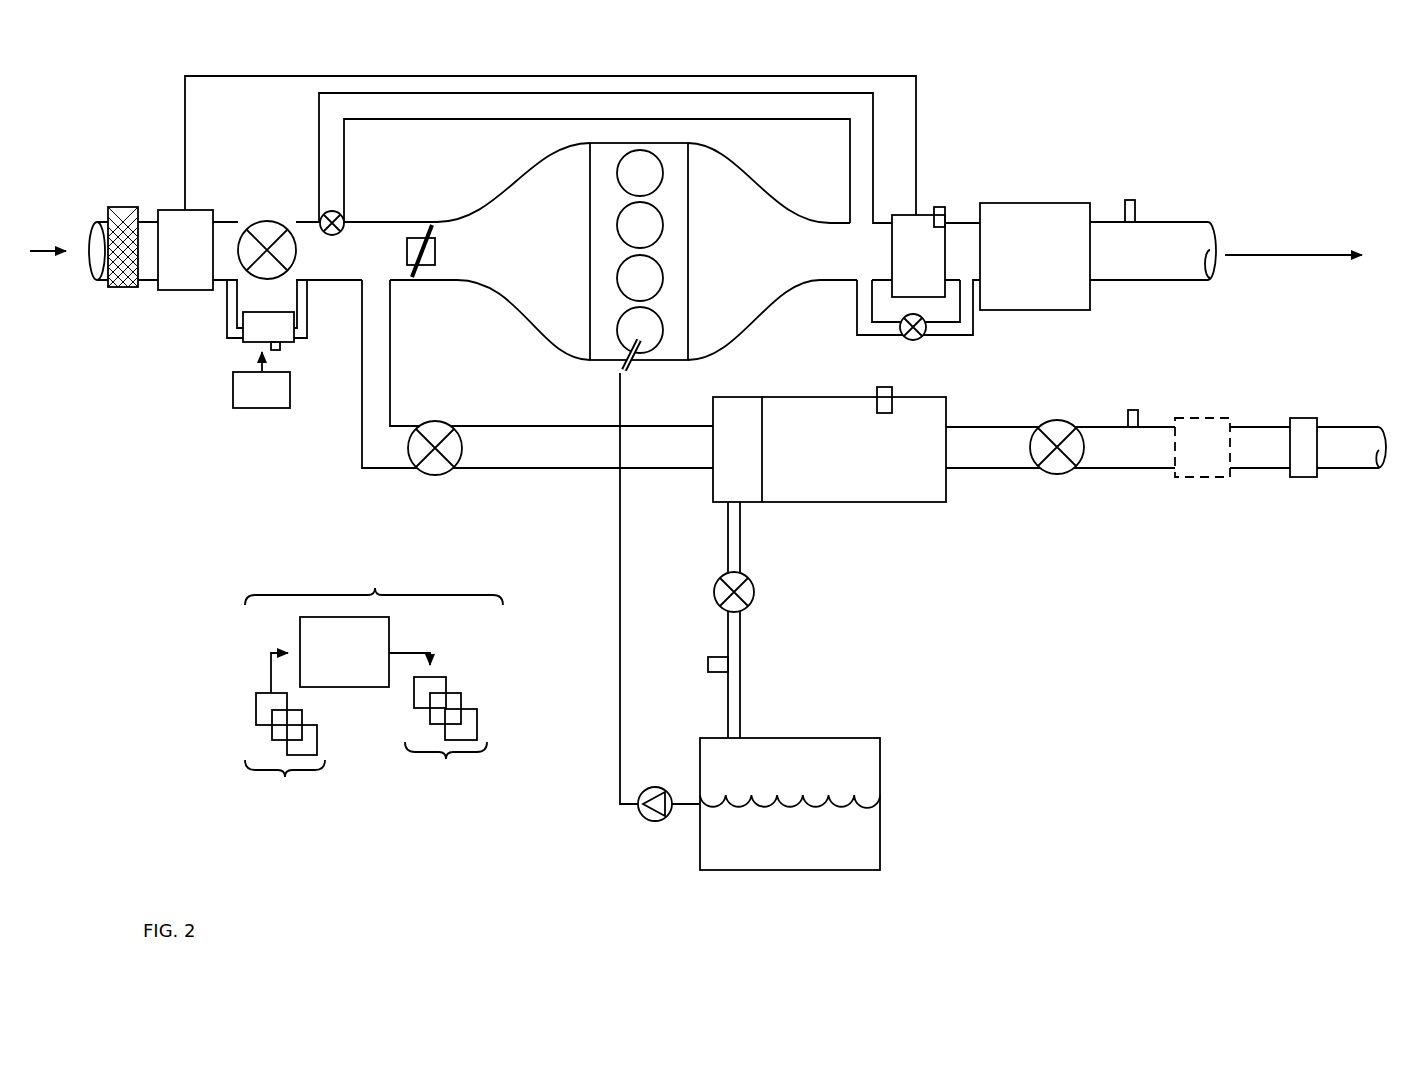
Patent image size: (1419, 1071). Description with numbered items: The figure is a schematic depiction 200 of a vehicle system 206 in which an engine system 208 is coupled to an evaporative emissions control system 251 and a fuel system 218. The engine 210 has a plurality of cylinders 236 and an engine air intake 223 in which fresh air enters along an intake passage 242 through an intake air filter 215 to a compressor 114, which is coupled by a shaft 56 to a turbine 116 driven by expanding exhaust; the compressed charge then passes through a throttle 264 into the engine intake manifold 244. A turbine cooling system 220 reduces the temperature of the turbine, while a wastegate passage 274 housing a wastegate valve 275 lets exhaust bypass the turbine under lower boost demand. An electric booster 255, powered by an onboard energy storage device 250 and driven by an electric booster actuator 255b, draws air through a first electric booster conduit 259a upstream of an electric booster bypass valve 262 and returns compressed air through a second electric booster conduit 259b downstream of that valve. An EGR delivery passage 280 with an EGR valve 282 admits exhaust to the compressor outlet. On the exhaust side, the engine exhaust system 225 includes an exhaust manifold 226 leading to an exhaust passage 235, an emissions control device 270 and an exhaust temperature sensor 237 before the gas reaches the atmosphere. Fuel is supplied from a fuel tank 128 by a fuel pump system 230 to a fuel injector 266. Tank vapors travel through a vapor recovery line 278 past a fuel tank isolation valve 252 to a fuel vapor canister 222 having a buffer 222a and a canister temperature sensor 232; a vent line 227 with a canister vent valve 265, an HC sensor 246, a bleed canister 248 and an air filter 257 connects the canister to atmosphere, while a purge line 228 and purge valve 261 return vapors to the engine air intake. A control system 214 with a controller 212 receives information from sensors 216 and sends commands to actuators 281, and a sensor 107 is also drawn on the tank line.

The schematic depiction 200 is at (1322, 127).
The vehicle system 206 is at (150, 152).
The intake passage 242 is at (150, 283).
The intake air filter 215 is at (130, 208).
The compressor 114 is at (185, 250).
The electric booster bypass valve 262 is at (266, 221).
The EGR valve 282 is at (337, 213).
The EGR delivery passage 280 is at (755, 120).
The shaft 56 is at (230, 77).
The engine air intake 223 is at (487, 195).
The engine intake manifold 244 is at (523, 301).
The throttle 264 is at (437, 258).
The engine 210 is at (688, 232).
The cylinders 236 is at (659, 166).
The fuel injector 266 is at (628, 366).
The exhaust manifold 226 is at (772, 251).
The engine system 208 is at (935, 118).
The turbine 116 is at (926, 256).
The cooling system 220 is at (942, 208).
The wastegate passage 274 is at (973, 338).
The wastegate valve 275 is at (915, 338).
The engine exhaust system 225 is at (1020, 163).
The emissions control device 270 is at (1020, 203).
The exhaust temperature sensor 237 is at (1122, 214).
The exhaust passage 235 is at (1165, 222).
The first electric booster conduit 259a is at (230, 325).
The second electric booster conduit 259b is at (306, 312).
The electric booster 255 is at (268, 327).
The electric booster actuator 255b is at (281, 349).
The onboard energy storage device 250 is at (261, 380).
The purge line 228 is at (537, 374).
The purge valve 261 is at (437, 422).
The fuel vapor canister 222 is at (948, 418).
The buffer 222a is at (738, 397).
The canister temperature sensor 232 is at (881, 386).
The vent line 227 is at (1166, 447).
The canister vent valve 265 is at (1057, 471).
The HC sensor 246 is at (1126, 424).
The bleed canister 248 is at (1200, 420).
The air filter 257 is at (1310, 418).
The evaporative emissions control system 251 is at (1367, 375).
The vapor recovery line 278 is at (727, 532).
The fuel tank isolation valve 252 is at (722, 607).
The fuel tank pressure transducer 107 is at (708, 662).
The fuel tank 128 is at (882, 795).
The fuel pump system 230 is at (658, 790).
The fuel system 218 is at (968, 812).
The control system 214 is at (374, 573).
The controller 212 is at (350, 655).
The sensors 216 is at (285, 757).
The actuators 281 is at (447, 740).